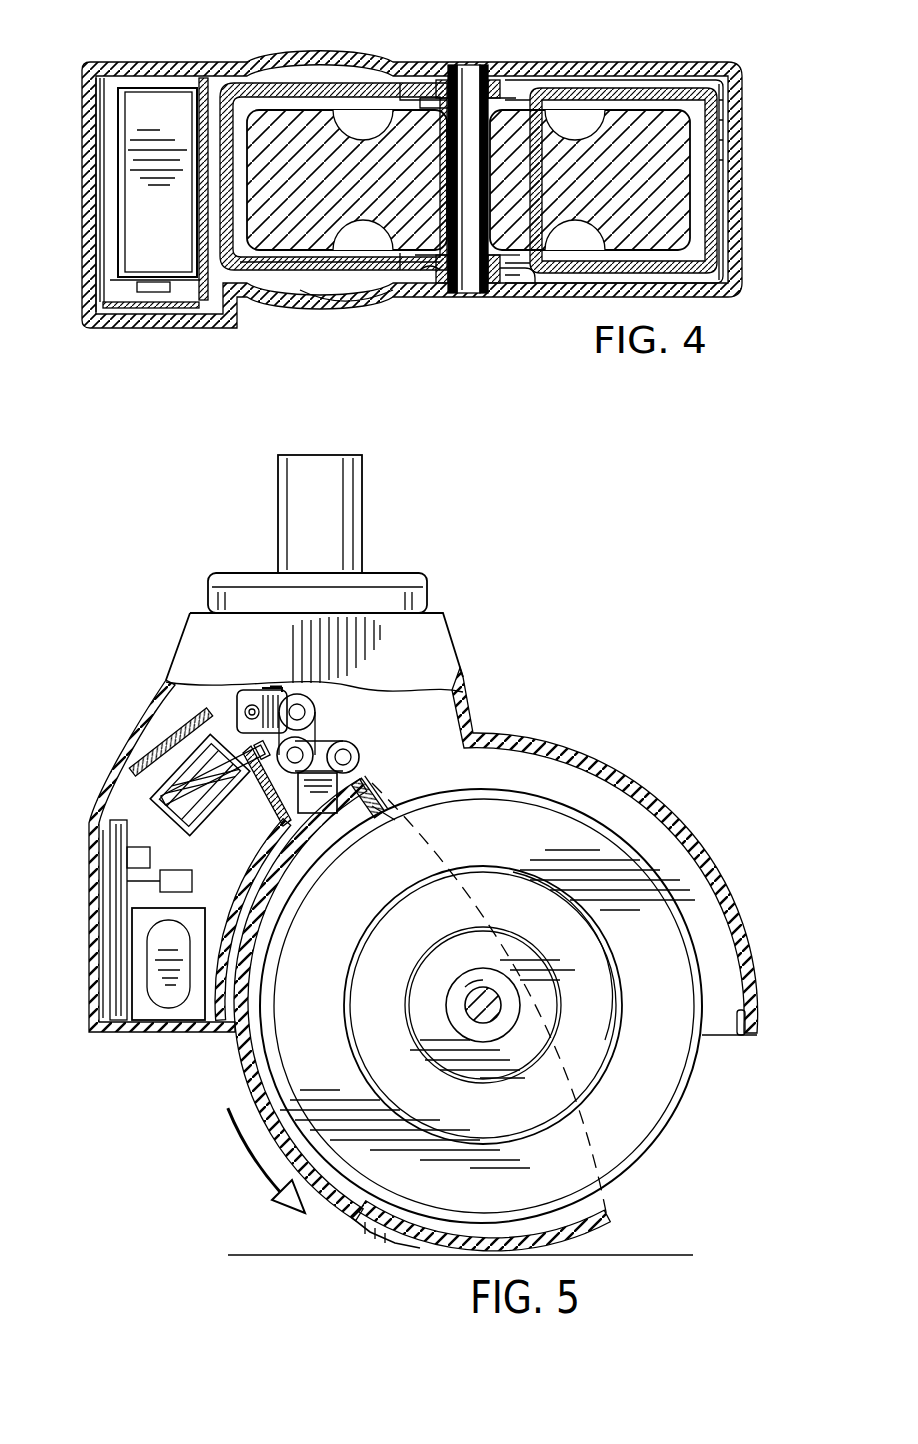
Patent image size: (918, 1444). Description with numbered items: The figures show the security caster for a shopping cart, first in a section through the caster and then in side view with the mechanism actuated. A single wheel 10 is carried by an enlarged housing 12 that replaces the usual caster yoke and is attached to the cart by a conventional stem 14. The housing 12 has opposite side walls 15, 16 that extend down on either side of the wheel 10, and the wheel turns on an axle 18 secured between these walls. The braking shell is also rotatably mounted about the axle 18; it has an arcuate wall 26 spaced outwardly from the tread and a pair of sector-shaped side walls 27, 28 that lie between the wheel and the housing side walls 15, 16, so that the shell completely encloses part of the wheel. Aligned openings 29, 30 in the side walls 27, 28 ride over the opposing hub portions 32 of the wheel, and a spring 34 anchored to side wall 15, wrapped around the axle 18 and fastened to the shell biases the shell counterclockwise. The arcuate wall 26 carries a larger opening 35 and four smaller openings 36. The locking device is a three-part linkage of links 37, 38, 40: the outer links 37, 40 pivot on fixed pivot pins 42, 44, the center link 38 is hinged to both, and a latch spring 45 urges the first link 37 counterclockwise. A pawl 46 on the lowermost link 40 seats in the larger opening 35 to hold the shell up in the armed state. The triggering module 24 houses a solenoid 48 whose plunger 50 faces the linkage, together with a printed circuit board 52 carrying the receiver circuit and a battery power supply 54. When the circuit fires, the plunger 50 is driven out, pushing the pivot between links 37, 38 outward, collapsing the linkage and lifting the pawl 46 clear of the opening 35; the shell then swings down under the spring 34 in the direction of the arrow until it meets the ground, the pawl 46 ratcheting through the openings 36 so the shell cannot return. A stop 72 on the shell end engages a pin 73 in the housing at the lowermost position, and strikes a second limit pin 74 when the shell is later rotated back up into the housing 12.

In FIG. 4, the wheel 10 is at (673, 182).
In FIG. 5, the wheel 10 is at (487, 1009).
In FIG. 4, the housing 12 is at (750, 95).
In FIG. 5, the housing 12 is at (596, 751).
In FIG. 5, the stem 14 is at (335, 510).
In FIG. 4, the side wall 15 is at (393, 297).
In FIG. 4, the side wall 16 is at (613, 67).
In FIG. 4, the axle 18 is at (468, 70).
In FIG. 5, the axle 18 is at (470, 1000).
In FIG. 4, the triggering module 24 is at (102, 98).
In FIG. 5, the triggering module 24 is at (165, 743).
In FIG. 4, the arcuate wall 26 is at (220, 97).
In FIG. 5, the arcuate wall 26 is at (607, 1217).
In FIG. 4, the side wall 27 is at (317, 273).
In FIG. 4, the side wall 28 is at (290, 85).
In FIG. 4, the opening 29 is at (448, 292).
In FIG. 4, the opening 30 is at (452, 78).
In FIG. 4, the hub portions 32 is at (503, 293).
In FIG. 5, the hub portions 32 is at (485, 1040).
In FIG. 4, the spring 34 is at (520, 285).
In FIG. 5, the larger opening 35 is at (395, 1243).
In FIG. 5, the smaller openings 36 is at (343, 822).
In FIG. 5, the first link 37 is at (245, 710).
In FIG. 5, the center link 38 is at (313, 733).
In FIG. 5, the third link 40 is at (323, 748).
In FIG. 5, the pivot pin 42 is at (252, 703).
In FIG. 5, the pivot pin 44 is at (352, 757).
In FIG. 5, the latch spring 45 is at (277, 687).
In FIG. 5, the pawl 46 is at (317, 808).
In FIG. 5, the solenoid 48 is at (167, 793).
In FIG. 5, the plunger 50 is at (120, 877).
In FIG. 4, the printed circuit board 52 is at (107, 142).
In FIG. 4, the battery power supply 54 is at (133, 208).
In FIG. 5, the battery power supply 54 is at (143, 1020).
In FIG. 4, the stop 72 is at (722, 140).
In FIG. 5, the stop 72 is at (372, 786).
In FIG. 5, the pin 73 is at (390, 818).
In FIG. 4, the second limit pin 74 is at (724, 228).
In FIG. 5, the second limit pin 74 is at (741, 1035).